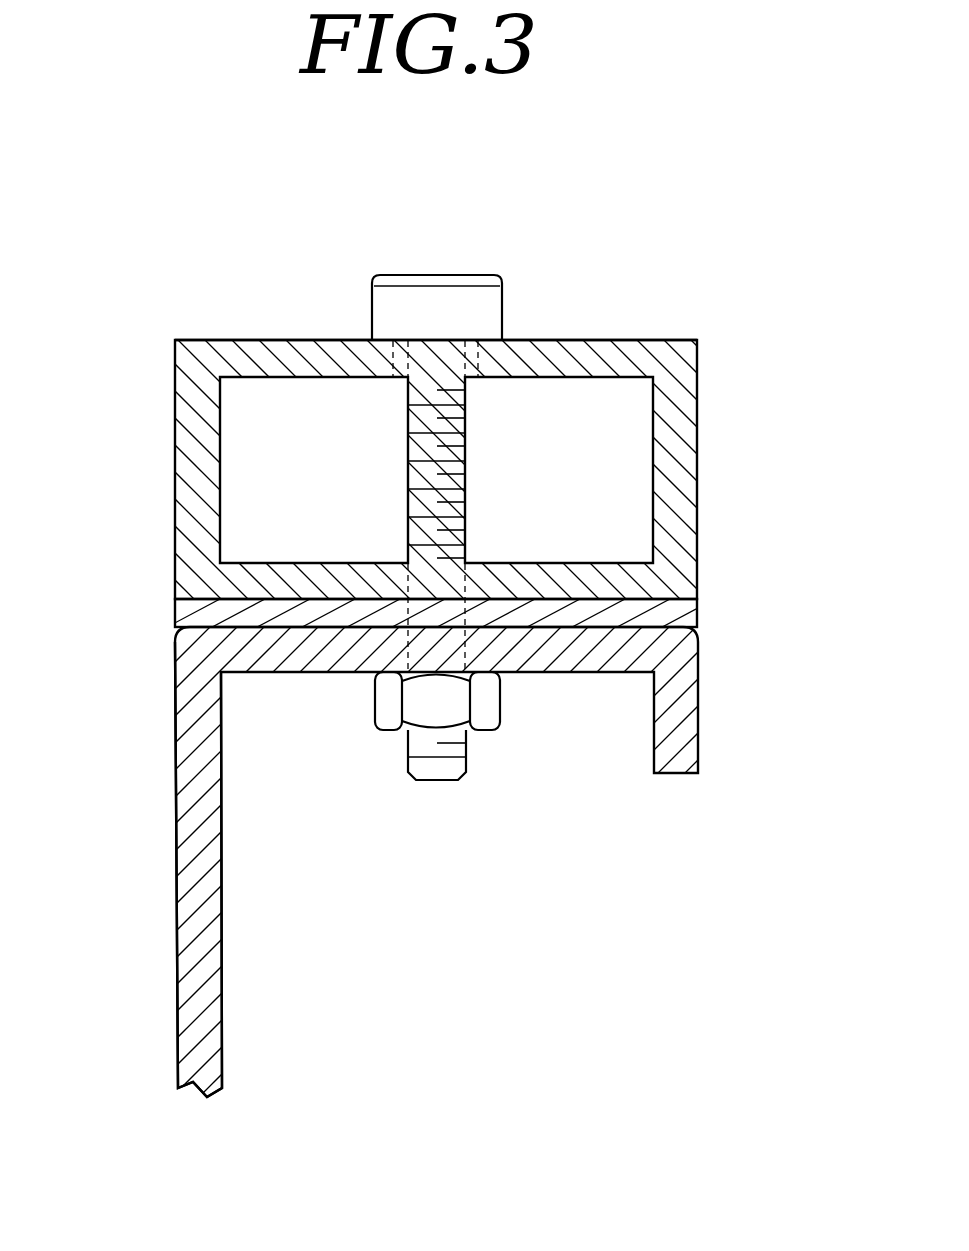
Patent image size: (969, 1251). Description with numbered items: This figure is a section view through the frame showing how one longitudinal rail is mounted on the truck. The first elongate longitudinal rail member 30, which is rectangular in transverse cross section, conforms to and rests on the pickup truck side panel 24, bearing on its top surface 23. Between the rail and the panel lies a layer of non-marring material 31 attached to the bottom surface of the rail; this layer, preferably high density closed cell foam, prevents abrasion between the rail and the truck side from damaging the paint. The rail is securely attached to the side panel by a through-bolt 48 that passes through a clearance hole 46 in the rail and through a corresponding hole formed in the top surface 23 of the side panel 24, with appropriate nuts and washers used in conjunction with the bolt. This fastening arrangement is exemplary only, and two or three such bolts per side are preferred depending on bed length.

The first elongate longitudinal rail member 30 is at (262, 340).
The through-bolt 48 is at (457, 275).
The clearance hole 46 is at (480, 357).
The layer of non-marring material 31 is at (697, 613).
The top surface 23 is at (628, 630).
The pickup truck side panel 24 is at (175, 770).